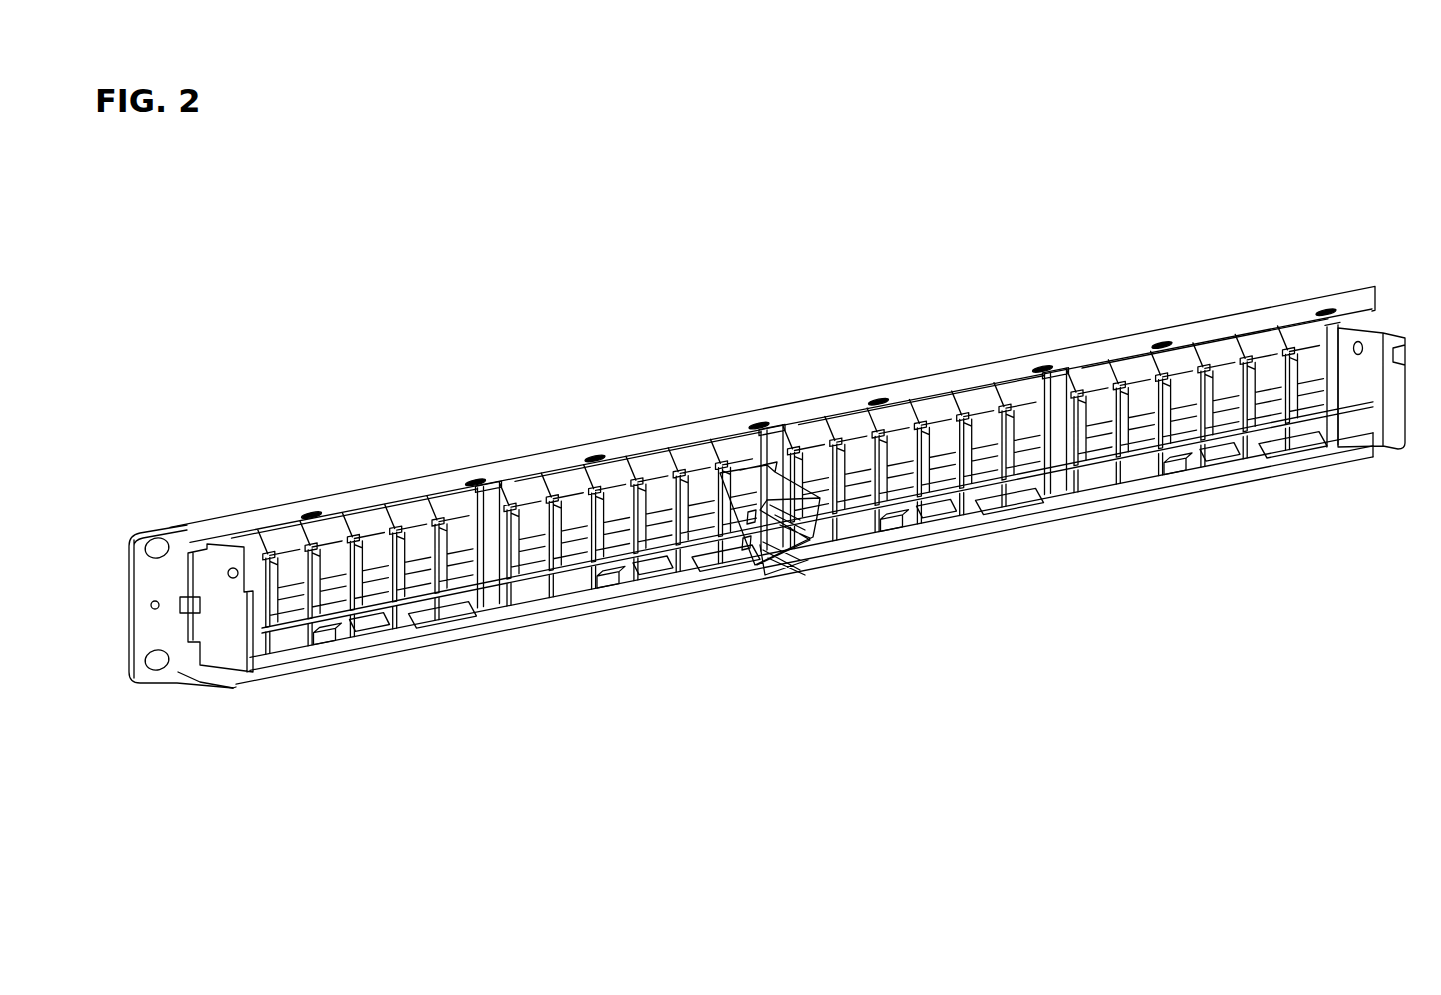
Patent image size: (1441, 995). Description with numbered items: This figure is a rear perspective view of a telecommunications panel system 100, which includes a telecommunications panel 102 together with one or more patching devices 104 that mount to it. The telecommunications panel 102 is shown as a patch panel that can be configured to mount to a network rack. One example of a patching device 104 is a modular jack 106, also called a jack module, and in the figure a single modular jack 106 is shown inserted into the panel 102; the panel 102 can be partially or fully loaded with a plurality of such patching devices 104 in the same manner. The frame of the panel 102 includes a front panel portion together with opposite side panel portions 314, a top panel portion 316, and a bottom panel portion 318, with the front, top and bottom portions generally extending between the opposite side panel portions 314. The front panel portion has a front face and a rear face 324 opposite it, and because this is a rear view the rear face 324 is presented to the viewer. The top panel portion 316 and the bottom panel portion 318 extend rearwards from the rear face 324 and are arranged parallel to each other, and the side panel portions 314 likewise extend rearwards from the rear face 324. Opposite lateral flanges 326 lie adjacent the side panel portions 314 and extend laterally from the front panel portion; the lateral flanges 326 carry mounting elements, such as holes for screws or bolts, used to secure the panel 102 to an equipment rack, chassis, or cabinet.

The telecommunications panel system 100 is at (731, 317).
The telecommunications panel 102 is at (1177, 300).
The patching device 104 is at (843, 630).
The modular jack 106 is at (767, 572).
The side panel portion 314 is at (216, 560).
The top panel portion 316 is at (1073, 348).
The bottom panel portion 318 is at (692, 583).
The rear face 324 is at (187, 538).
The lateral flange 326 is at (142, 572).